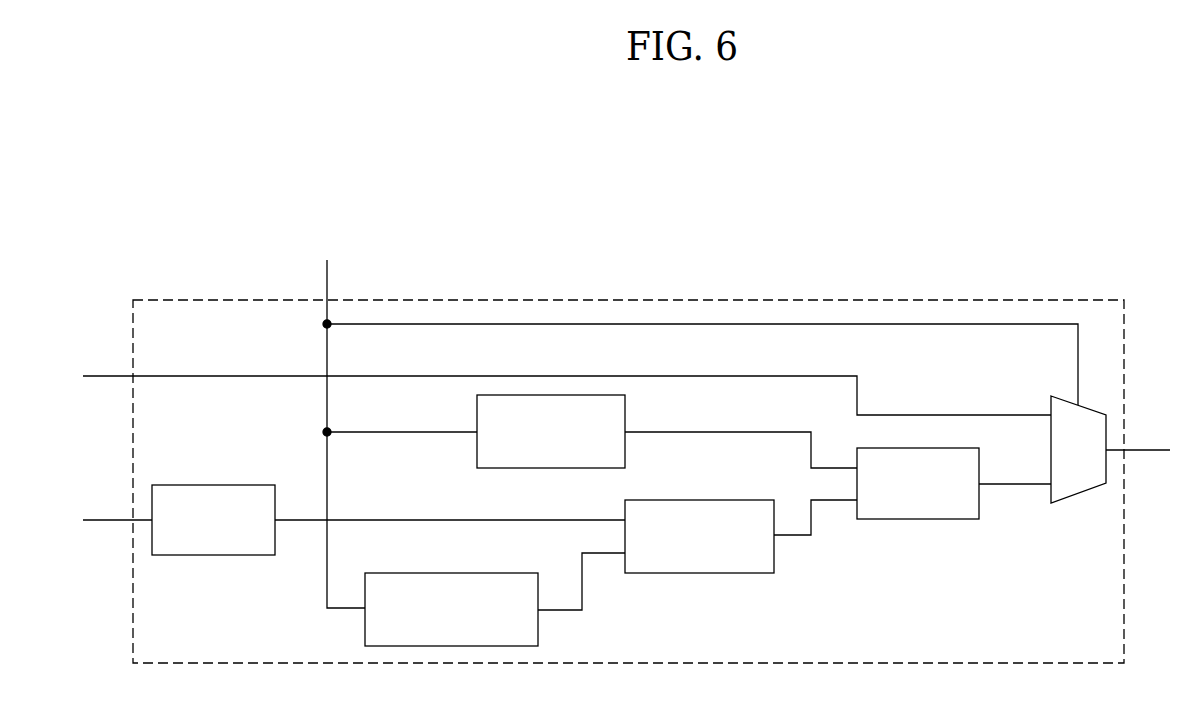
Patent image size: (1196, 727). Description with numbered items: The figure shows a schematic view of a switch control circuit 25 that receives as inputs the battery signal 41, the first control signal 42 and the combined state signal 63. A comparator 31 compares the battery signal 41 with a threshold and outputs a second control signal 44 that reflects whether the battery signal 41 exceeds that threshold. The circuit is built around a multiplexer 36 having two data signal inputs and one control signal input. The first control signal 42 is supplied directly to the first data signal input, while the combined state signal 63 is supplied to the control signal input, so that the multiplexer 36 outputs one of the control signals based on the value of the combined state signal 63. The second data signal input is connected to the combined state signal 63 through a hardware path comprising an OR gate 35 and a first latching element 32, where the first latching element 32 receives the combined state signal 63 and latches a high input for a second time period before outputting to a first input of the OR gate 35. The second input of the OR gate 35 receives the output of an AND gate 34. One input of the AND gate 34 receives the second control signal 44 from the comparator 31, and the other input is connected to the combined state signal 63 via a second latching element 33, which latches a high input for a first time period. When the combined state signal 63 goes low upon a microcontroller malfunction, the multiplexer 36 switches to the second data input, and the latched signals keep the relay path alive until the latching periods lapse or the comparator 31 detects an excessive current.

The switch control circuit 25 is at (777, 300).
The comparator 31 is at (213, 555).
The first latching element 32 is at (477, 452).
The second latching element 33 is at (452, 646).
The AND gate 34 is at (700, 573).
The OR gate 35 is at (918, 520).
The multiplexer 36 is at (1090, 406).
The battery signal 41 is at (117, 506).
The first control signal 42 is at (626, 398).
The second control signal 44 is at (719, 487).
The combined state signal 63 is at (711, 420).